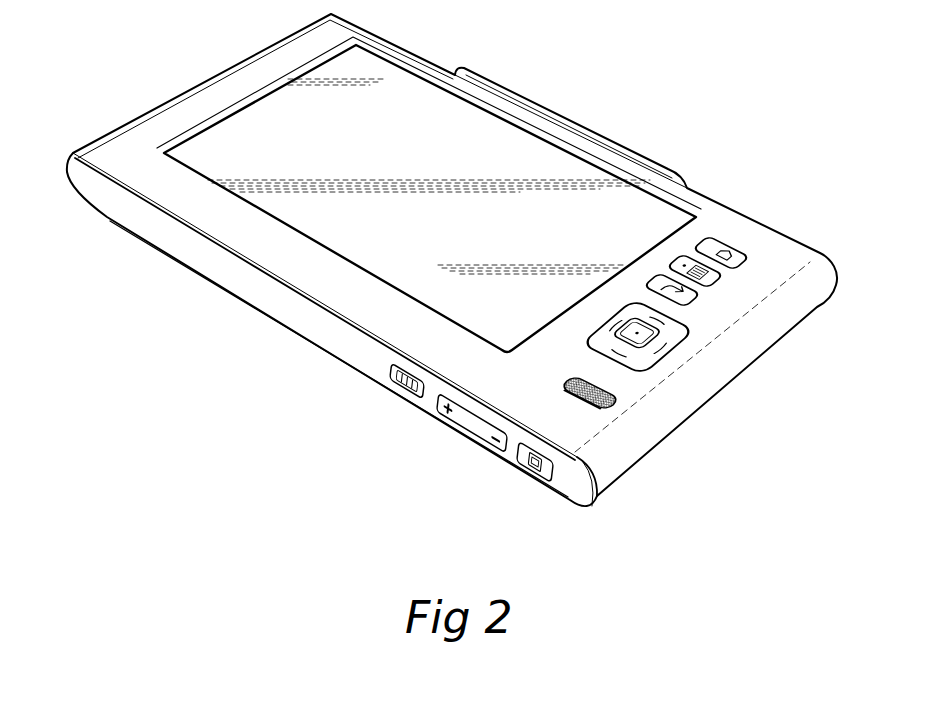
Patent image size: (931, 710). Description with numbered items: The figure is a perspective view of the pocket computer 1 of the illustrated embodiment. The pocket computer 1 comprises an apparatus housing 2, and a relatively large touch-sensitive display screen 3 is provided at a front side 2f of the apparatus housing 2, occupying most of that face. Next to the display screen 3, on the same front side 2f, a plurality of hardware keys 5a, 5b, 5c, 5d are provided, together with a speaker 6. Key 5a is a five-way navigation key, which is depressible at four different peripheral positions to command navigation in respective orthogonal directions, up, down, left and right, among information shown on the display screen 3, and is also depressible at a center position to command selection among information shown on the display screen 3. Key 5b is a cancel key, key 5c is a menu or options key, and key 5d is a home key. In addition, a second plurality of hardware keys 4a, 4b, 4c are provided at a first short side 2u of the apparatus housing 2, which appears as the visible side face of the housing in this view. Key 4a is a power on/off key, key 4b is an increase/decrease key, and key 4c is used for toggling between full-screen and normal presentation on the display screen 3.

The pocket computer 1 is at (134, 55).
The apparatus housing 2 is at (113, 138).
The front side 2f is at (270, 62).
The first short side 2u is at (245, 298).
The touch-sensitive display screen 3 is at (348, 165).
The power on/off key 4a is at (393, 383).
The increase/decrease key 4b is at (465, 424).
The full-screen toggle key 4c is at (521, 462).
The five-way navigation key 5a is at (650, 357).
The cancel key 5b is at (695, 305).
The menu or options key 5c is at (720, 289).
The home key 5d is at (742, 266).
The speaker 6 is at (614, 404).